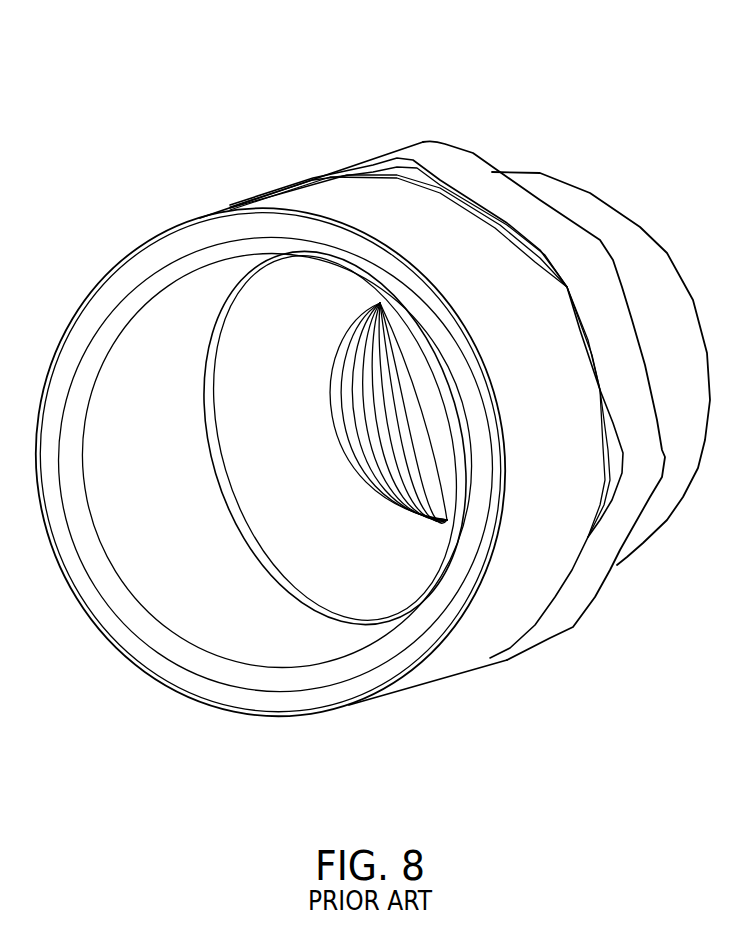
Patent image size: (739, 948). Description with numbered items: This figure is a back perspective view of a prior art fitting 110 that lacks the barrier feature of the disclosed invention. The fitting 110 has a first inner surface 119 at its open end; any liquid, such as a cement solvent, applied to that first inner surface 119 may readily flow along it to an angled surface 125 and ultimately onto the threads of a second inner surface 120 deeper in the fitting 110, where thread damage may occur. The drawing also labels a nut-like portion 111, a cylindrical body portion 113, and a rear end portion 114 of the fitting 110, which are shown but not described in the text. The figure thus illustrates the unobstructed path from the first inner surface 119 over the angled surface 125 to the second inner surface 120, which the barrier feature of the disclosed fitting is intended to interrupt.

The prior art fitting 110 is at (548, 93).
The hex nut portion 111 is at (535, 673).
The cylindrical body 113 is at (424, 688).
The rear flange / nipple portion 114 is at (621, 563).
The first inner surface 119 is at (204, 634).
The second inner surface 120 is at (369, 373).
The angled surface 125 is at (288, 490).